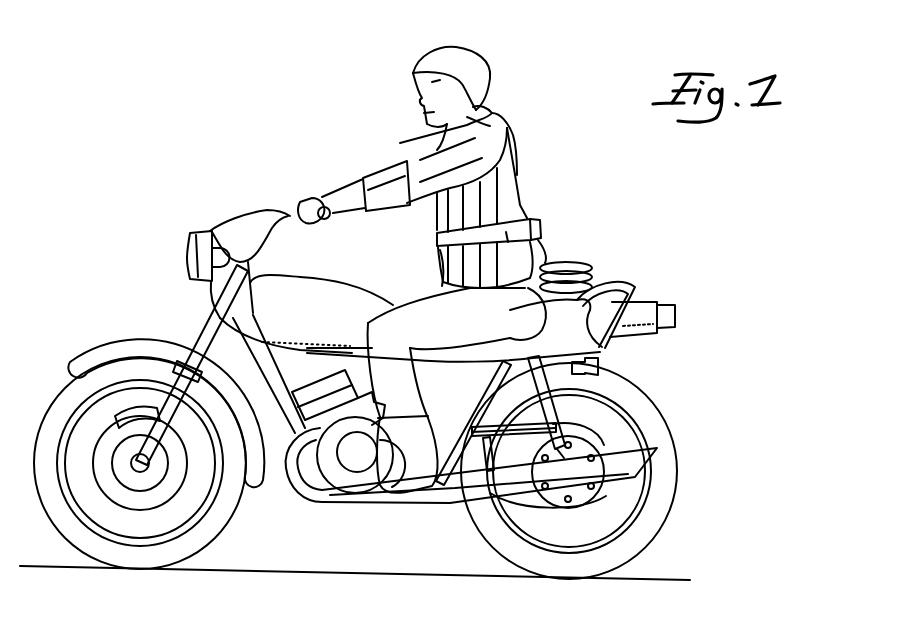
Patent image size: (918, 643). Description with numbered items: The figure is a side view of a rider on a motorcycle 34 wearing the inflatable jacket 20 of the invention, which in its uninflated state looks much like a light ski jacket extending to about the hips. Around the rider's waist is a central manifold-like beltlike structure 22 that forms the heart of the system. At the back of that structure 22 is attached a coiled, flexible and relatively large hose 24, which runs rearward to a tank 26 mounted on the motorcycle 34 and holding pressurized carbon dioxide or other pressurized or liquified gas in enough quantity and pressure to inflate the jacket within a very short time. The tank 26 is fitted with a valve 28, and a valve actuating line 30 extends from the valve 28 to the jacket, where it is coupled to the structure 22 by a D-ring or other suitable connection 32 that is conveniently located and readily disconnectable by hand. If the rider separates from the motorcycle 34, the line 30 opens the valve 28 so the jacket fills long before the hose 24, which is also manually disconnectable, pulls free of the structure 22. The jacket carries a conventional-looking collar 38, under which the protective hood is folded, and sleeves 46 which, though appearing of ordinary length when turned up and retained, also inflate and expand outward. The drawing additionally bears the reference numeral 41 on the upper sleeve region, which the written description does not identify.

The jacket 20 is at (522, 166).
The beltlike structure 22 is at (438, 250).
The coiled flexible hose 24 is at (541, 266).
The tank 26 is at (644, 297).
The valve 28 is at (604, 350).
The valve actuating line 30 is at (601, 281).
The D-ring connection 32 is at (511, 216).
The motorcycle 34 is at (172, 249).
The collar 38 is at (480, 112).
The sleeve 41 is at (405, 157).
The sleeves 46 is at (415, 190).